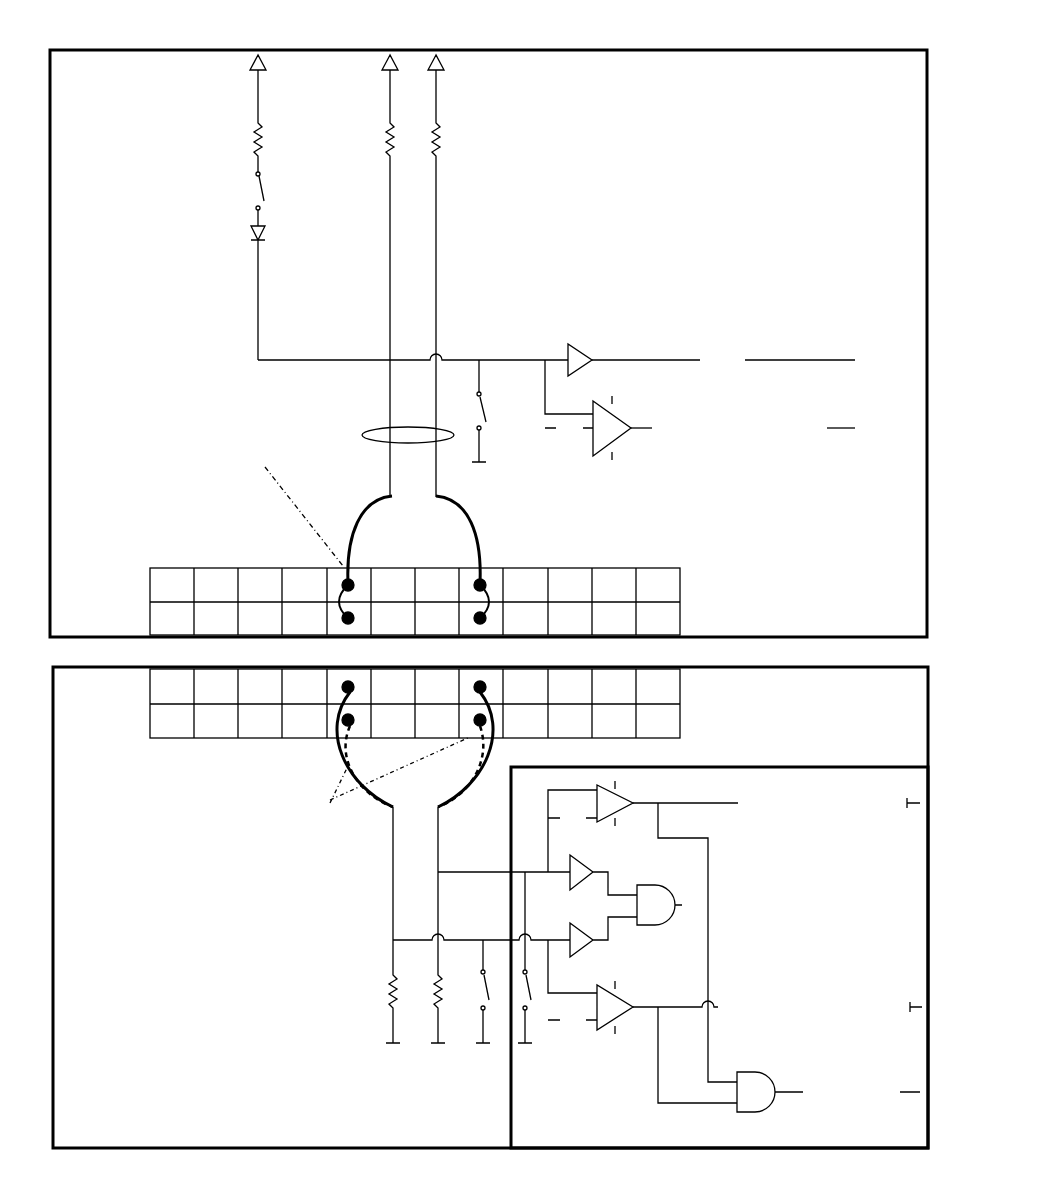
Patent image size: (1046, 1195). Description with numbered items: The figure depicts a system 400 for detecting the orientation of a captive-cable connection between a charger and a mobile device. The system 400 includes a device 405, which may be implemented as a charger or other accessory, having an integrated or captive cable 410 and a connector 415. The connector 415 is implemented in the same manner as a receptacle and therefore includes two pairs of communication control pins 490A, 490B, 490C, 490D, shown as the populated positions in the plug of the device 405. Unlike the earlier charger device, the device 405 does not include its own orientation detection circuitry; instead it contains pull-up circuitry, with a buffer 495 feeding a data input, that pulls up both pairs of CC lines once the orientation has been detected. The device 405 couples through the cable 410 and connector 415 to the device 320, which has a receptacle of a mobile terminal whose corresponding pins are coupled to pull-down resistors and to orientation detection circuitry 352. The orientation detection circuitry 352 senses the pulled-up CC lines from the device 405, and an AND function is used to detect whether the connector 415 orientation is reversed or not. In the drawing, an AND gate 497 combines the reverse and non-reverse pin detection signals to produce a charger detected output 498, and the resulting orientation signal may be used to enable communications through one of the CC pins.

The system 400 is at (489, 577).
The device 405 is at (488, 343).
The integrated cable 410 is at (362, 435).
The connector 415 is at (682, 580).
The CC pin 490A is at (352, 578).
The CC pin 490B is at (490, 568).
The CC pin 490C is at (345, 618).
The CC pin 490D is at (497, 623).
The data input buffer 495 is at (621, 358).
The device 320 is at (490, 907).
The orientation detection circuitry 352 is at (719, 957).
The AND gate 497 is at (760, 1073).
The charger detected output 498 is at (781, 1097).